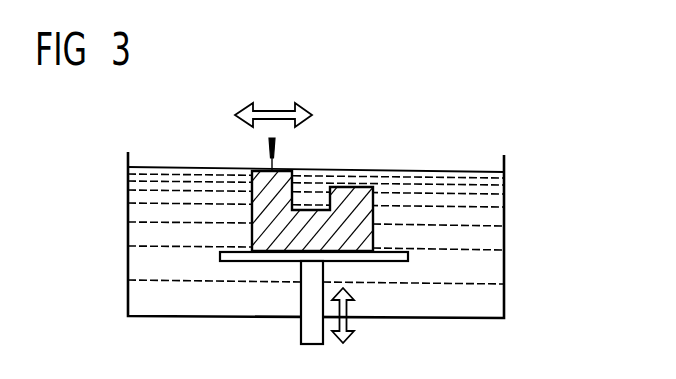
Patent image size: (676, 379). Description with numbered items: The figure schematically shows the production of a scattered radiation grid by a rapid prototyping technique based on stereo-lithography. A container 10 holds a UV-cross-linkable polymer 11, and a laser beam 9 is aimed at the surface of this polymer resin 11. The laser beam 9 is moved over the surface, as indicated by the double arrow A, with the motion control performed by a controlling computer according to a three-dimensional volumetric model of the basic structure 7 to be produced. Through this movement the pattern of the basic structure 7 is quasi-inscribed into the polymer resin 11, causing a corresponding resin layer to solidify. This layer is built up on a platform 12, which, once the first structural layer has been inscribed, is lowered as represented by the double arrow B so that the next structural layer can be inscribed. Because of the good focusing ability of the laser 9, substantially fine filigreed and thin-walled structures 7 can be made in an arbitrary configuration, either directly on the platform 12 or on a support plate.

The basic structure 7 is at (345, 188).
The laser beam 9 is at (267, 141).
The container 10 is at (505, 158).
The UV-cross-linkable polymer 11 is at (490, 268).
The platform 12 is at (250, 262).
The double arrow A is at (272, 113).
The double arrow B is at (350, 333).